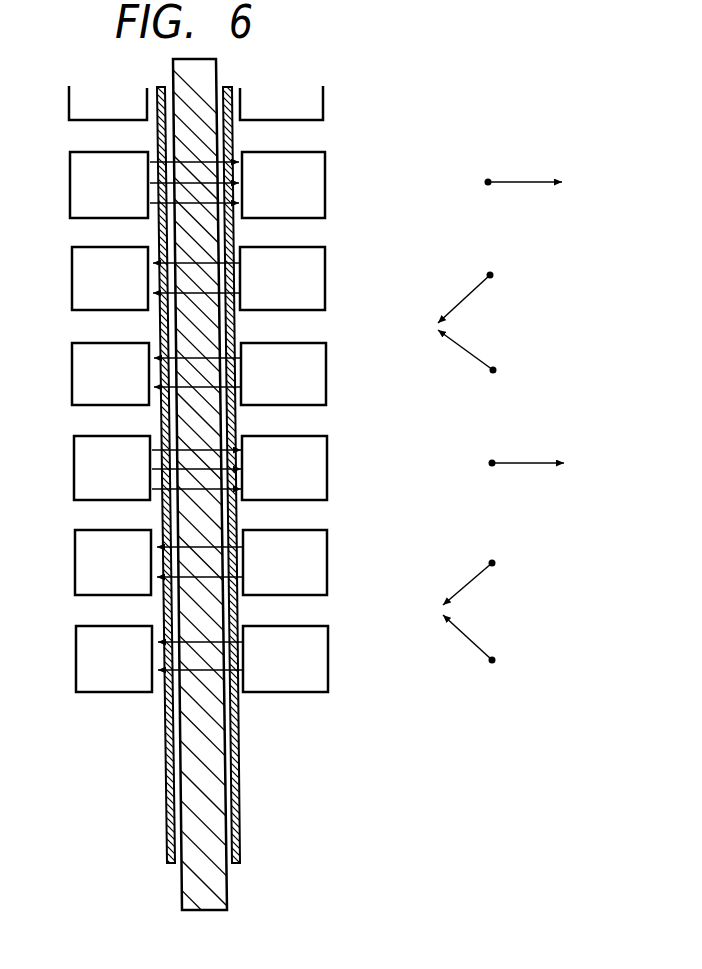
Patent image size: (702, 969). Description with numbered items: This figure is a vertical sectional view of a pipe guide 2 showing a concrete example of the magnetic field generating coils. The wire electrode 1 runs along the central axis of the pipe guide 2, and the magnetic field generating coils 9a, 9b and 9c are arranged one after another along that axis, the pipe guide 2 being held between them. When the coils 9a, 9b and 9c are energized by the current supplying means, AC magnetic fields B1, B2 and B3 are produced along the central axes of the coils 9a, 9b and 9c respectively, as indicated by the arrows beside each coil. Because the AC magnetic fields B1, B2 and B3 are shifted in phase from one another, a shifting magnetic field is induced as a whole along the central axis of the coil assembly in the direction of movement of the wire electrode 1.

The wire electrode 1 is at (228, 858).
The pipe guide 2 is at (240, 788).
The magnetic field generating coil 9a is at (325, 193).
The magnetic field generating coil 9b is at (325, 268).
The magnetic field generating coil 9c is at (326, 377).
The AC magnetic field B1 is at (546, 325).
The AC magnetic field B2 is at (523, 434).
The AC magnetic field B3 is at (523, 502).